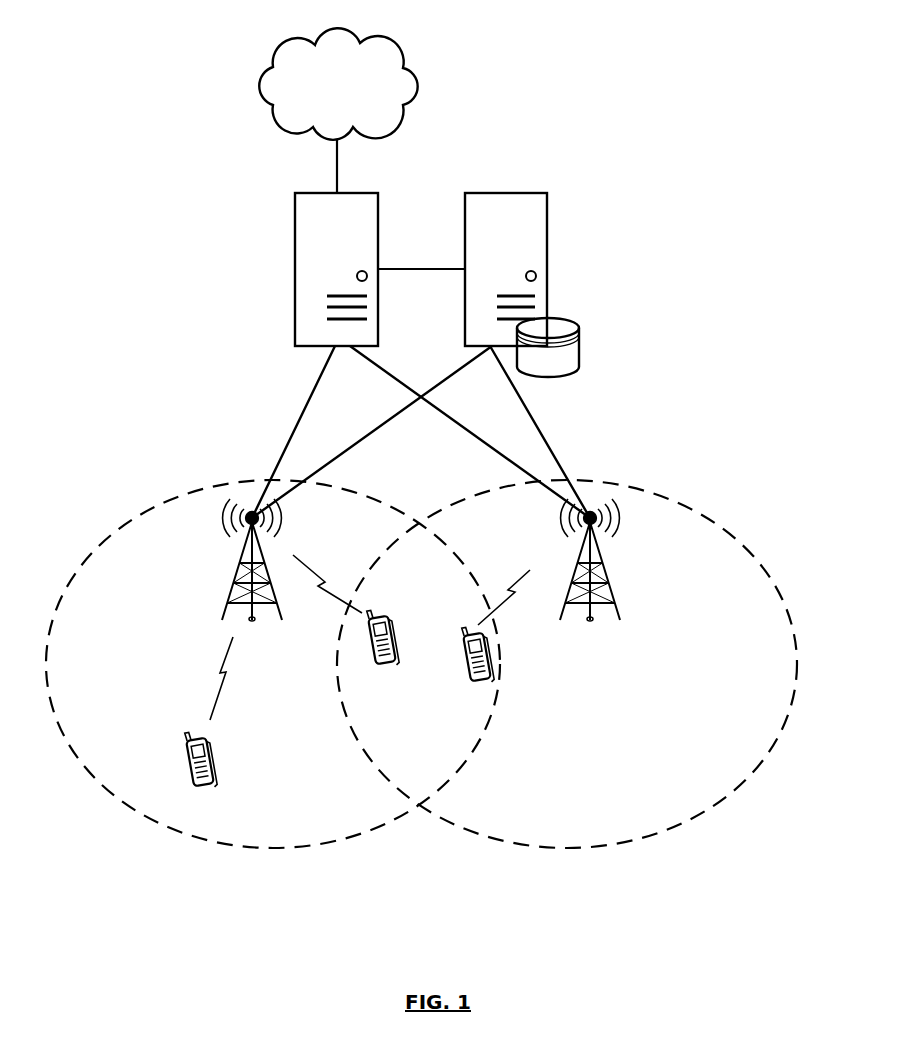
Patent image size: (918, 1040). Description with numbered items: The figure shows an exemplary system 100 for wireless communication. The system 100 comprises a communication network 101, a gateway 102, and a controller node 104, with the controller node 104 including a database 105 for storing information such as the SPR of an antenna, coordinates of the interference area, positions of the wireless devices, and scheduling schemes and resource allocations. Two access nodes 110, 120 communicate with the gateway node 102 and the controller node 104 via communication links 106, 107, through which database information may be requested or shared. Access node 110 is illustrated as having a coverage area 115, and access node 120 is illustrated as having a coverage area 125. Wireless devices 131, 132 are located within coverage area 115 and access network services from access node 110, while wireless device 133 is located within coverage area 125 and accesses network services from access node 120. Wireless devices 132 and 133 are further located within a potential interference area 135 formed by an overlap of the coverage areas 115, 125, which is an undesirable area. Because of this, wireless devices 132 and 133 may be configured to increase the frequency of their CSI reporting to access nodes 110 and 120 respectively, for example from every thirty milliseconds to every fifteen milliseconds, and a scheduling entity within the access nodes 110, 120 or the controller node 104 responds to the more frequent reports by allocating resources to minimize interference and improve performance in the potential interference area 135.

The system 100 is at (512, 110).
The communication network 101 is at (338, 84).
The gateway 102 is at (295, 233).
The controller node 104 is at (547, 248).
The database 105 is at (579, 347).
The communication link 106 is at (398, 383).
The communication link 107 is at (365, 437).
The access node 110 is at (237, 588).
The coverage area 115 is at (273, 848).
The access node 120 is at (608, 595).
The coverage area 125 is at (558, 848).
The wireless device 131 is at (198, 787).
The wireless device 132 is at (373, 664).
The wireless device 133 is at (478, 689).
The potential interference area 135 is at (422, 757).